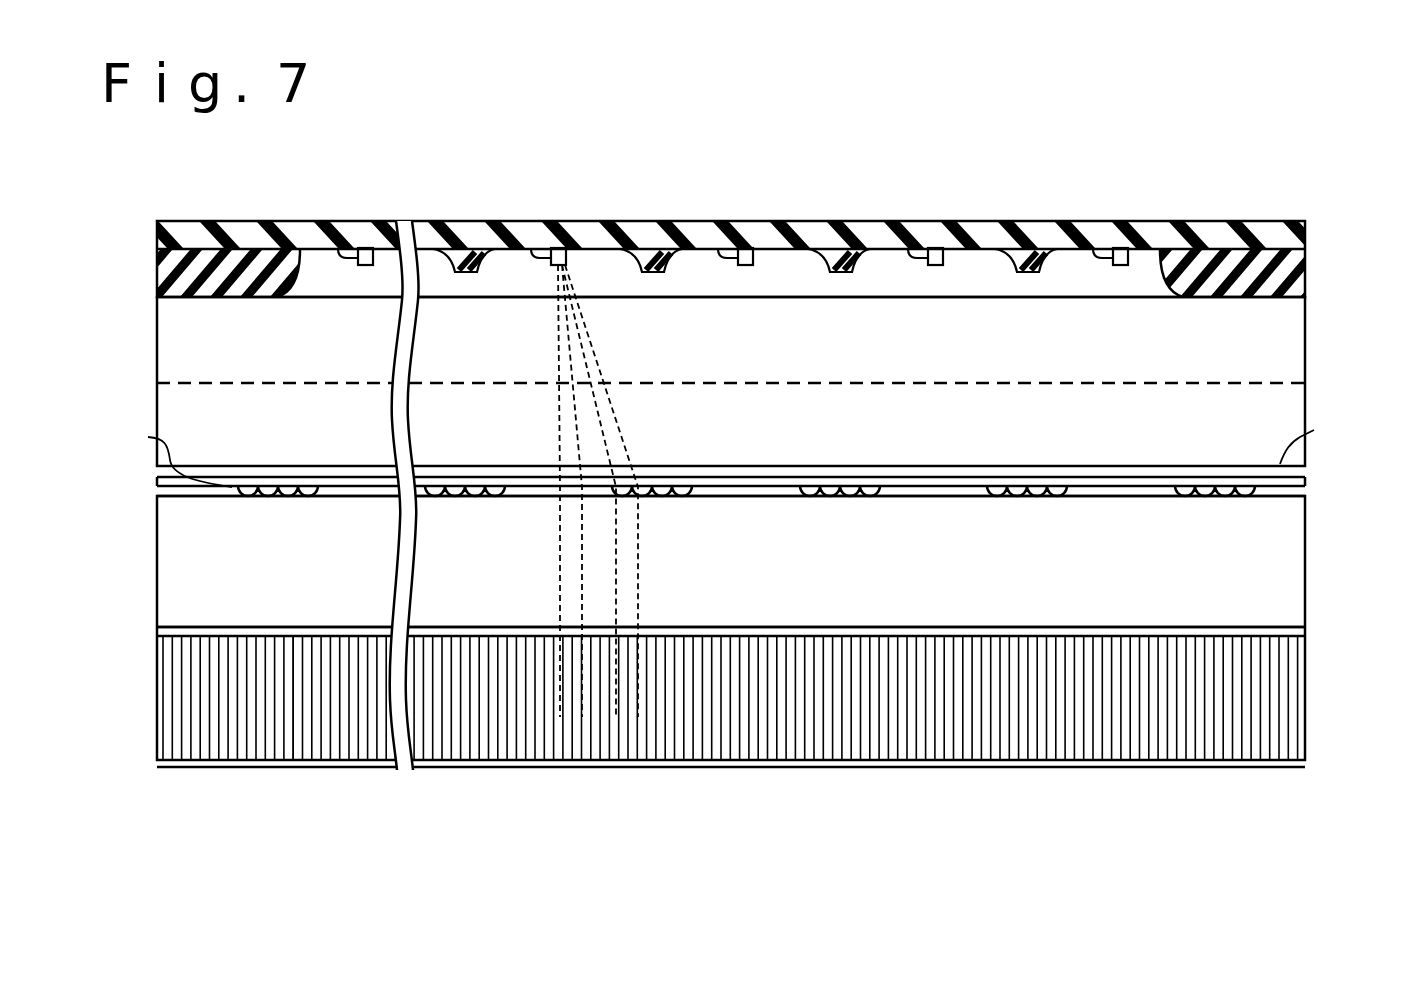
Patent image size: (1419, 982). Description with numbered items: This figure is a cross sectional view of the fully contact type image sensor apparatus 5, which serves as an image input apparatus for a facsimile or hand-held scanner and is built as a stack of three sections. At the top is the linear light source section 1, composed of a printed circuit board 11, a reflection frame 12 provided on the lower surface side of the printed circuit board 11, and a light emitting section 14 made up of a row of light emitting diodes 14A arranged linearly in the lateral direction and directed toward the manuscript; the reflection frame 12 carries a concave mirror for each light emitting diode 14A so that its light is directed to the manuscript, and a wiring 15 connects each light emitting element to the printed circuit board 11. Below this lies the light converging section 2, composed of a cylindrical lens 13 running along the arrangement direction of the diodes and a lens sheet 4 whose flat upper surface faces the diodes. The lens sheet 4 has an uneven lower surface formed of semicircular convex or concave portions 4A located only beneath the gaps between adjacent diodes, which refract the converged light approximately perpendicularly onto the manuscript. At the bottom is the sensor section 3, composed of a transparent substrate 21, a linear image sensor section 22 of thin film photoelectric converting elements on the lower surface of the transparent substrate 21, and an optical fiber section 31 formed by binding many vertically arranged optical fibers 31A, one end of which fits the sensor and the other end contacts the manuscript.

The linear light source section 1 is at (1378, 205).
The printed circuit board 11 is at (1302, 231).
The reflection frame 12 is at (1302, 269).
The cylindrical lens 13 is at (1302, 396).
The light emitting section 14 is at (550, 245).
The light emitting diode 14A is at (1133, 258).
The wiring 15 is at (898, 246).
The light converging section 2 is at (1378, 368).
The lens sheet 4 is at (1302, 481).
The convex or concave portion 4A is at (727, 450).
The sensor section 3 is at (1378, 522).
The transparent substrate 21 is at (1302, 554).
The linear image sensor section 22 is at (1302, 633).
The optical fiber section 31 is at (1302, 696).
The optical fiber 31A is at (290, 742).
The image sensor apparatus 5 is at (1328, 861).